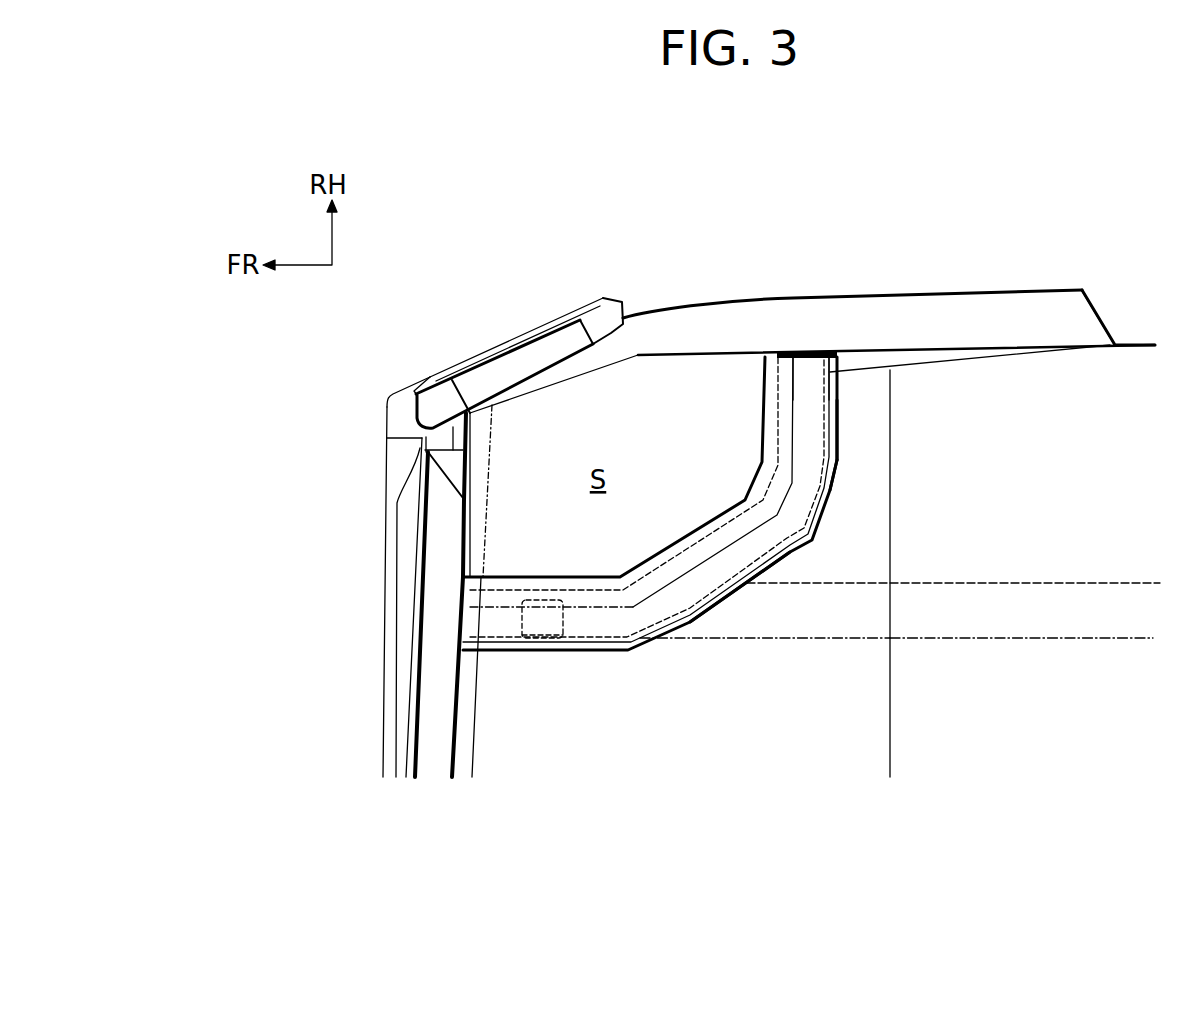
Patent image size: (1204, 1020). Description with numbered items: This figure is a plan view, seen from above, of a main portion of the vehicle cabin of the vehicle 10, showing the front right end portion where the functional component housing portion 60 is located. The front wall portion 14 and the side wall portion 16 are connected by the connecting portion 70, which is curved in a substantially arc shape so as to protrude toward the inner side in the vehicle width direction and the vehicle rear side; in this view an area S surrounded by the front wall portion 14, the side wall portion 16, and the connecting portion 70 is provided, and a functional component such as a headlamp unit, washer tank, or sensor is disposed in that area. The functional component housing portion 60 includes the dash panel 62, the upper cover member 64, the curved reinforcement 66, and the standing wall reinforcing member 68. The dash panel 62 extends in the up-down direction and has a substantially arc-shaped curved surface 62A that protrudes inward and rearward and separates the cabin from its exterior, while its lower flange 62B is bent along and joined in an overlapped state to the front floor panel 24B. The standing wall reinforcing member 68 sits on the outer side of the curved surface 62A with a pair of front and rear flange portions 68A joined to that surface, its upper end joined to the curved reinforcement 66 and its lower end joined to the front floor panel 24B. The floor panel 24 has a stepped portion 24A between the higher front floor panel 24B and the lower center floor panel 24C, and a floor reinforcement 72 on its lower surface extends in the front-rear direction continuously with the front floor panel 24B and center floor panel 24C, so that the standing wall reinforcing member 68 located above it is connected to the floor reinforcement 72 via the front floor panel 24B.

The vehicle 10 is at (460, 247).
The front wall portion 14 is at (413, 593).
The side wall portion 16 is at (975, 292).
The floor panel 24 is at (1125, 376).
The stepped portion 24A is at (890, 410).
The front floor panel 24B is at (628, 723).
The center floor panel 24C is at (1017, 697).
The functional component housing portion 60 is at (665, 662).
The dash panel 62 is at (727, 603).
The curved surface 62A is at (787, 557).
The lower flange 62B is at (832, 512).
The upper cover member 64 is at (793, 375).
The curved reinforcement 66 is at (828, 412).
The standing wall reinforcing member 68 is at (515, 620).
The flange portion 68A is at (567, 635).
The connecting portion 70 is at (837, 455).
The floor reinforcement 72 is at (1055, 583).